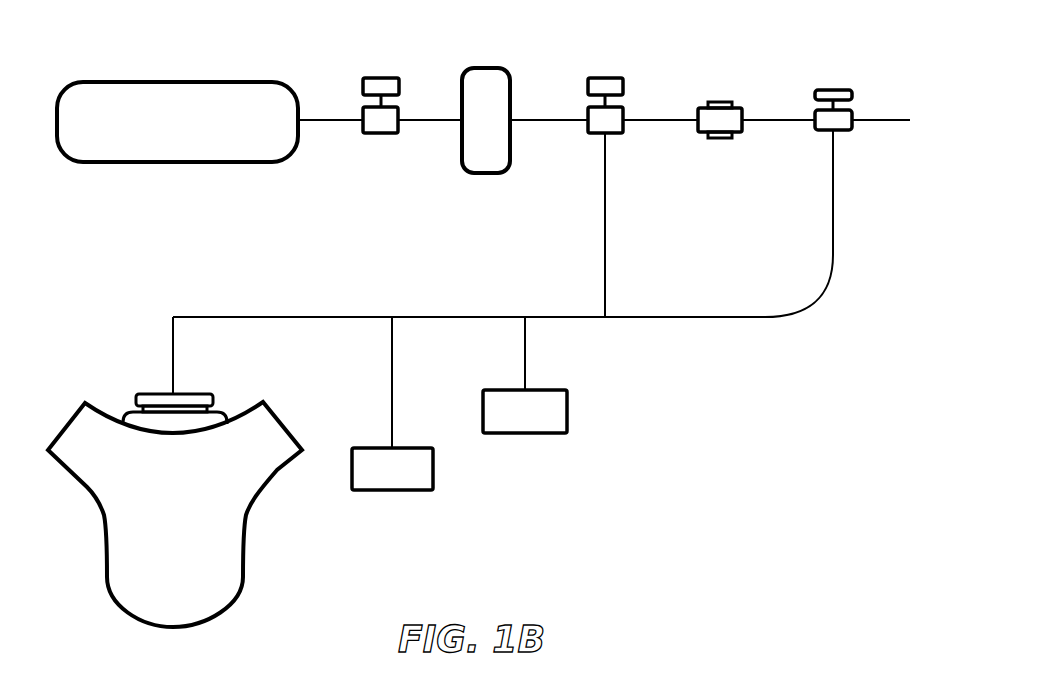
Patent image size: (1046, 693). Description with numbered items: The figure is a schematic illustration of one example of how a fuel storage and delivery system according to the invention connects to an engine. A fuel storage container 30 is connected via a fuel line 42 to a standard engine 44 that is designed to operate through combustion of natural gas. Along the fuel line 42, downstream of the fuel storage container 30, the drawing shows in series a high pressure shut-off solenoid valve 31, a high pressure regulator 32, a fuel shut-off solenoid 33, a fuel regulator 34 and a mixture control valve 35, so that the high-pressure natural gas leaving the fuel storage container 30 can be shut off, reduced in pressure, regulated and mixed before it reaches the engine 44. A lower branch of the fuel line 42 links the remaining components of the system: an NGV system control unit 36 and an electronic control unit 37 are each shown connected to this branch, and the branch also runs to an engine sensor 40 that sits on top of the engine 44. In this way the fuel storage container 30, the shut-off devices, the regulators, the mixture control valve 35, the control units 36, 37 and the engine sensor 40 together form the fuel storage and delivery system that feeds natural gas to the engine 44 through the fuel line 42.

The fuel storage container 30 is at (232, 82).
The high pressure shut-off solenoid valve 31 is at (378, 78).
The high pressure regulator 32 is at (477, 68).
The fuel shut-off solenoid 33 is at (605, 78).
The fuel regulator 34 is at (717, 102).
The mixture control valve 35 is at (838, 90).
The NGV system control unit 36 is at (540, 433).
The electronic control unit 37 is at (405, 490).
The engine sensor 40 is at (124, 423).
The fuel line 42 is at (455, 317).
The engine 44 is at (257, 510).